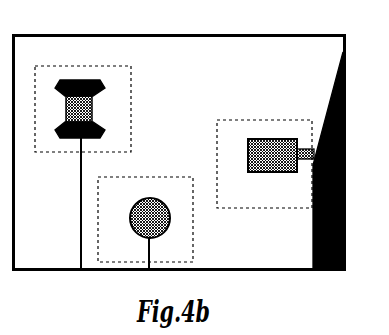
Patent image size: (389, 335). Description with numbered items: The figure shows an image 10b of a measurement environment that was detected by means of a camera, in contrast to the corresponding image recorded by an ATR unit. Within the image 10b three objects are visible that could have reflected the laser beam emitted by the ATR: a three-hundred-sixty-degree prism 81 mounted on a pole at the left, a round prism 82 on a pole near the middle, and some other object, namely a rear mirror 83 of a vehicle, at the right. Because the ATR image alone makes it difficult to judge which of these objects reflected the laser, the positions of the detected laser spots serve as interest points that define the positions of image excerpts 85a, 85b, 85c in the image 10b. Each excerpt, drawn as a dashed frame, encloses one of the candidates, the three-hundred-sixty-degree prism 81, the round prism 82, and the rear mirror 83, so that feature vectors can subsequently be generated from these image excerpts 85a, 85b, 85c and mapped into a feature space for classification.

The image 10b is at (92, 35).
The 360° prism 81 is at (92, 111).
The round prism 82 is at (163, 231).
The rear mirror 83 is at (272, 153).
The image excerpt 85a is at (108, 67).
The image excerpt 85b is at (145, 177).
The image excerpt 85c is at (250, 208).